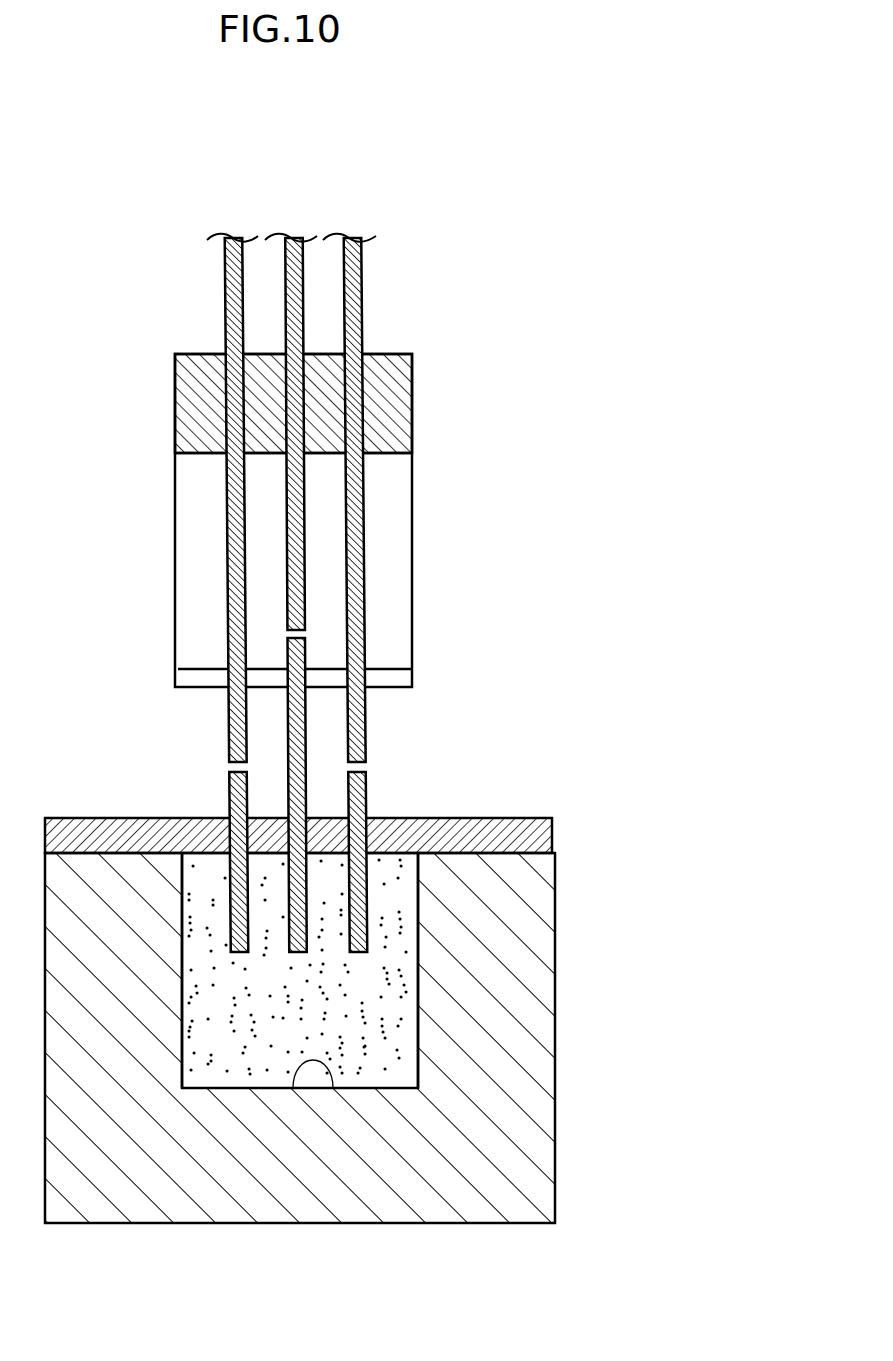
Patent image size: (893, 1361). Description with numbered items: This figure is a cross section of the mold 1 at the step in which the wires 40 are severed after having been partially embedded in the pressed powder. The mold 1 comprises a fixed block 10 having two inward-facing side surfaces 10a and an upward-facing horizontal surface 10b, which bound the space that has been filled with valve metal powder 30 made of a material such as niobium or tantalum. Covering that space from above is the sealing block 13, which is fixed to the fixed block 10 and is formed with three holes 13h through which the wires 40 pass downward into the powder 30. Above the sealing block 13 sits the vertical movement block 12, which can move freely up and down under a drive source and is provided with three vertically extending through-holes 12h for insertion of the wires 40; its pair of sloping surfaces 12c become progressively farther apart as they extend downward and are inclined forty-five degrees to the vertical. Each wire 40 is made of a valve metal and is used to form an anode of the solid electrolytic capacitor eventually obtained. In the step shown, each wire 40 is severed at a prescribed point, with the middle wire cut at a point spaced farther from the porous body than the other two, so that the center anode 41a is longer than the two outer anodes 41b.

The mold 1 is at (595, 266).
The fixed block 10 is at (450, 1205).
The inward-facing side surfaces 10a is at (182, 977).
The upward-facing horizontal surface 10b is at (333, 1088).
The vertical movement block 12 is at (410, 418).
The sloping surfaces 12c is at (388, 540).
The through-holes 12h is at (307, 395).
The sealing block 13 is at (450, 818).
The holes 13h is at (347, 818).
The valve metal powder 30 is at (193, 908).
The wires 40 is at (352, 236).
The anode 41a is at (302, 952).
The anodes 41b is at (243, 952).